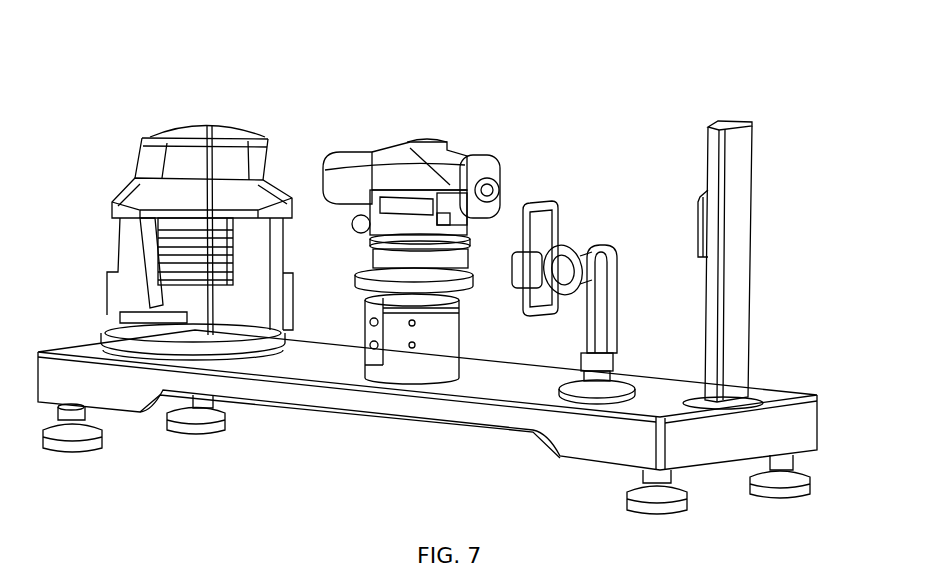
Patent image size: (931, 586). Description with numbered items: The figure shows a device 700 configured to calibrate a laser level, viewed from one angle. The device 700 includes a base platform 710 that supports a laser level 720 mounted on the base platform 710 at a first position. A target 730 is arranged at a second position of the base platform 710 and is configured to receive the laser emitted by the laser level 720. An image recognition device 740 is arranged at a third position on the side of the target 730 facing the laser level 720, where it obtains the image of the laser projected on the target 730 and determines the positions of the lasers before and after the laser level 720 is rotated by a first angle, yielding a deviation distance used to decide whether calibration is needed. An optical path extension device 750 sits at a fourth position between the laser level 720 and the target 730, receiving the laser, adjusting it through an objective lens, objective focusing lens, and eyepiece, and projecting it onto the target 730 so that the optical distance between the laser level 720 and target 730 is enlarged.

The device 700 is at (647, 37).
The base platform 710 is at (790, 421).
The laser level 720 is at (252, 170).
The target 730 is at (730, 222).
The image recognition device 740 is at (557, 225).
The optical path extension device 750 is at (488, 174).